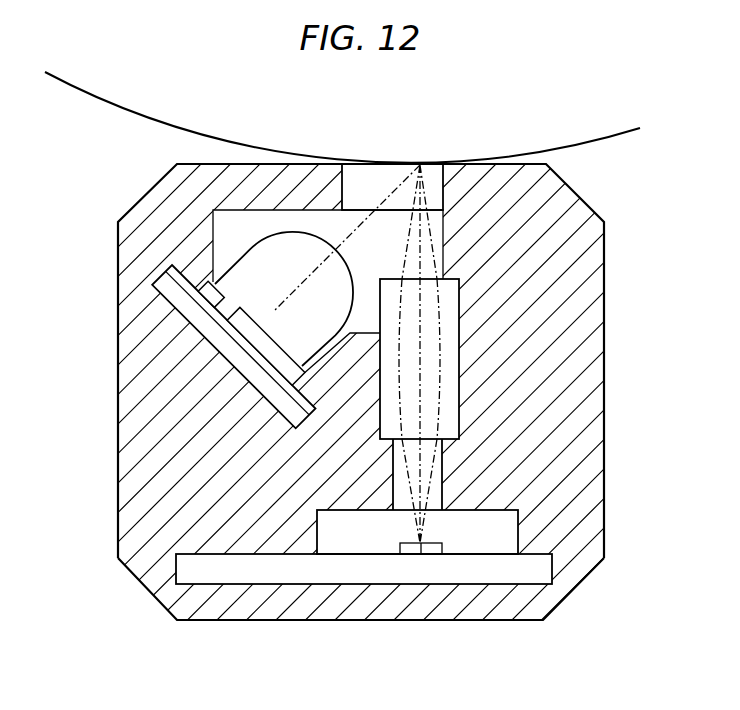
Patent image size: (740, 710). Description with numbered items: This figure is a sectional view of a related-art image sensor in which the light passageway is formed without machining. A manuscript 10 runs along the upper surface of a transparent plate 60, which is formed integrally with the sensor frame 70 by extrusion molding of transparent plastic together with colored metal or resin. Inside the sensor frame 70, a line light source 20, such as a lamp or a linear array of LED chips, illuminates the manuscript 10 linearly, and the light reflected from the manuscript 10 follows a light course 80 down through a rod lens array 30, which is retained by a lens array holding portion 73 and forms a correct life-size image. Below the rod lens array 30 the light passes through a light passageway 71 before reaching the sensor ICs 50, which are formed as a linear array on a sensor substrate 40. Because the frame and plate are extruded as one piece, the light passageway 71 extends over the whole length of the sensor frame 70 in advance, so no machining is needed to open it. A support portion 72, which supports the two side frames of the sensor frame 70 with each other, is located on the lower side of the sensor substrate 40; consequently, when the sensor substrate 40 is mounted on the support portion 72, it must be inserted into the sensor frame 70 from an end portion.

The manuscript 10 is at (586, 150).
The line light source 20 is at (226, 300).
The rod lens array 30 is at (460, 291).
The sensor substrate 40 is at (530, 567).
The sensor ICs 50 is at (437, 540).
The transparent plate 60 is at (366, 184).
The sensor frame 70 is at (150, 471).
The light passageway 71 is at (447, 462).
The support portion 72 is at (400, 597).
The lens array holding portion 73 is at (477, 357).
The light course 80 is at (422, 170).